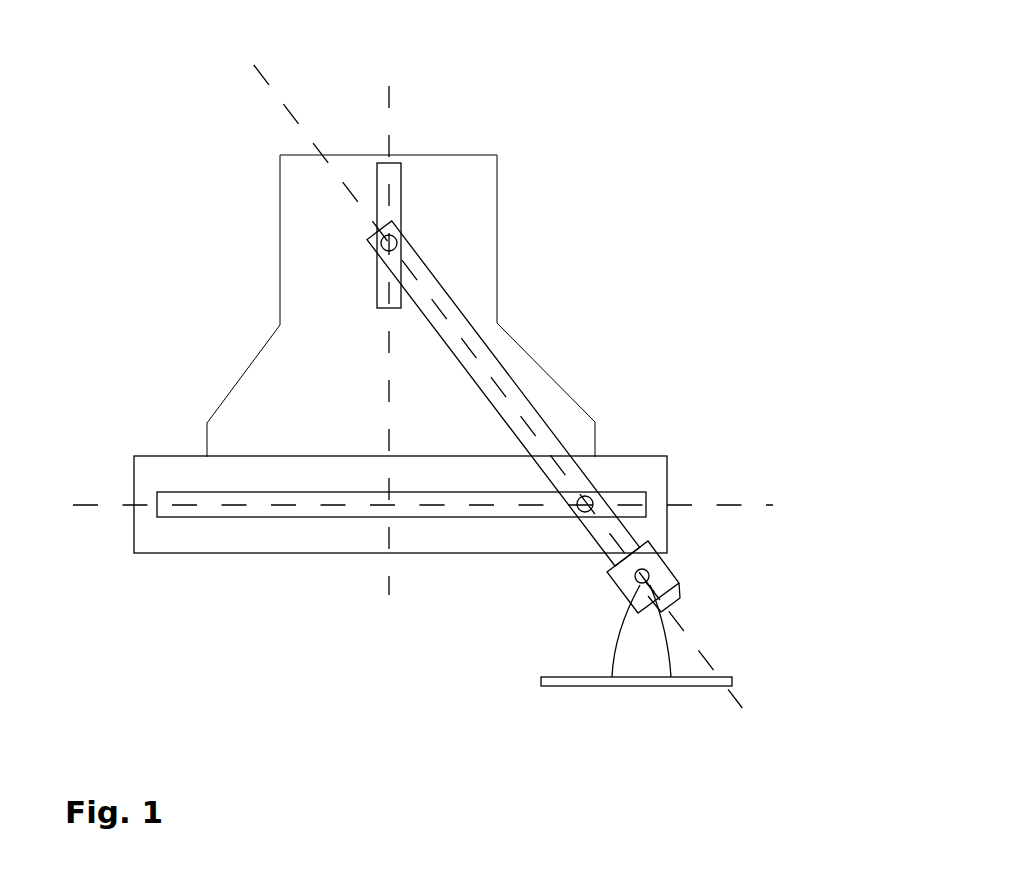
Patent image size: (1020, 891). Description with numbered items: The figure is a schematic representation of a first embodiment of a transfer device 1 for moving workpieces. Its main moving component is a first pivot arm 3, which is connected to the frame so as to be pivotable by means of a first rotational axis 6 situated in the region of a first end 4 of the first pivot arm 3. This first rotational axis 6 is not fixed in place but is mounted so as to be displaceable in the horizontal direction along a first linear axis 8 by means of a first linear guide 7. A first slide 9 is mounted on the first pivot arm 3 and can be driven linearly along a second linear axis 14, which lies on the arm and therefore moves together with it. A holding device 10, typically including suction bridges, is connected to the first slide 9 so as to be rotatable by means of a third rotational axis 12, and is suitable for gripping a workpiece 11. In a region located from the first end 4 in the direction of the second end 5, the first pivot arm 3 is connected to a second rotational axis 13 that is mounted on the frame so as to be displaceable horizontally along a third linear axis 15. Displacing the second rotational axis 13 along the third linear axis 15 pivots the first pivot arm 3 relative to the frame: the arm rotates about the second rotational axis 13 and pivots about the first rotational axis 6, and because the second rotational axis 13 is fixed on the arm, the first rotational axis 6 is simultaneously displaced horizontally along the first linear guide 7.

The transfer device 1 is at (190, 59).
The first pivot arm 3 is at (488, 361).
The first end 4 is at (376, 210).
The second end 5 is at (690, 624).
The first rotational axis 6 is at (397, 242).
The first linear guide 7 is at (397, 178).
The first linear axis 8 is at (390, 102).
The first slide 9 is at (607, 573).
The holding device 10 is at (618, 628).
The workpiece 11 is at (642, 686).
The third rotational axis 12 is at (647, 577).
The second rotational axis 13 is at (588, 498).
The second linear axis 14 is at (268, 85).
The third linear axis 15 is at (94, 505).